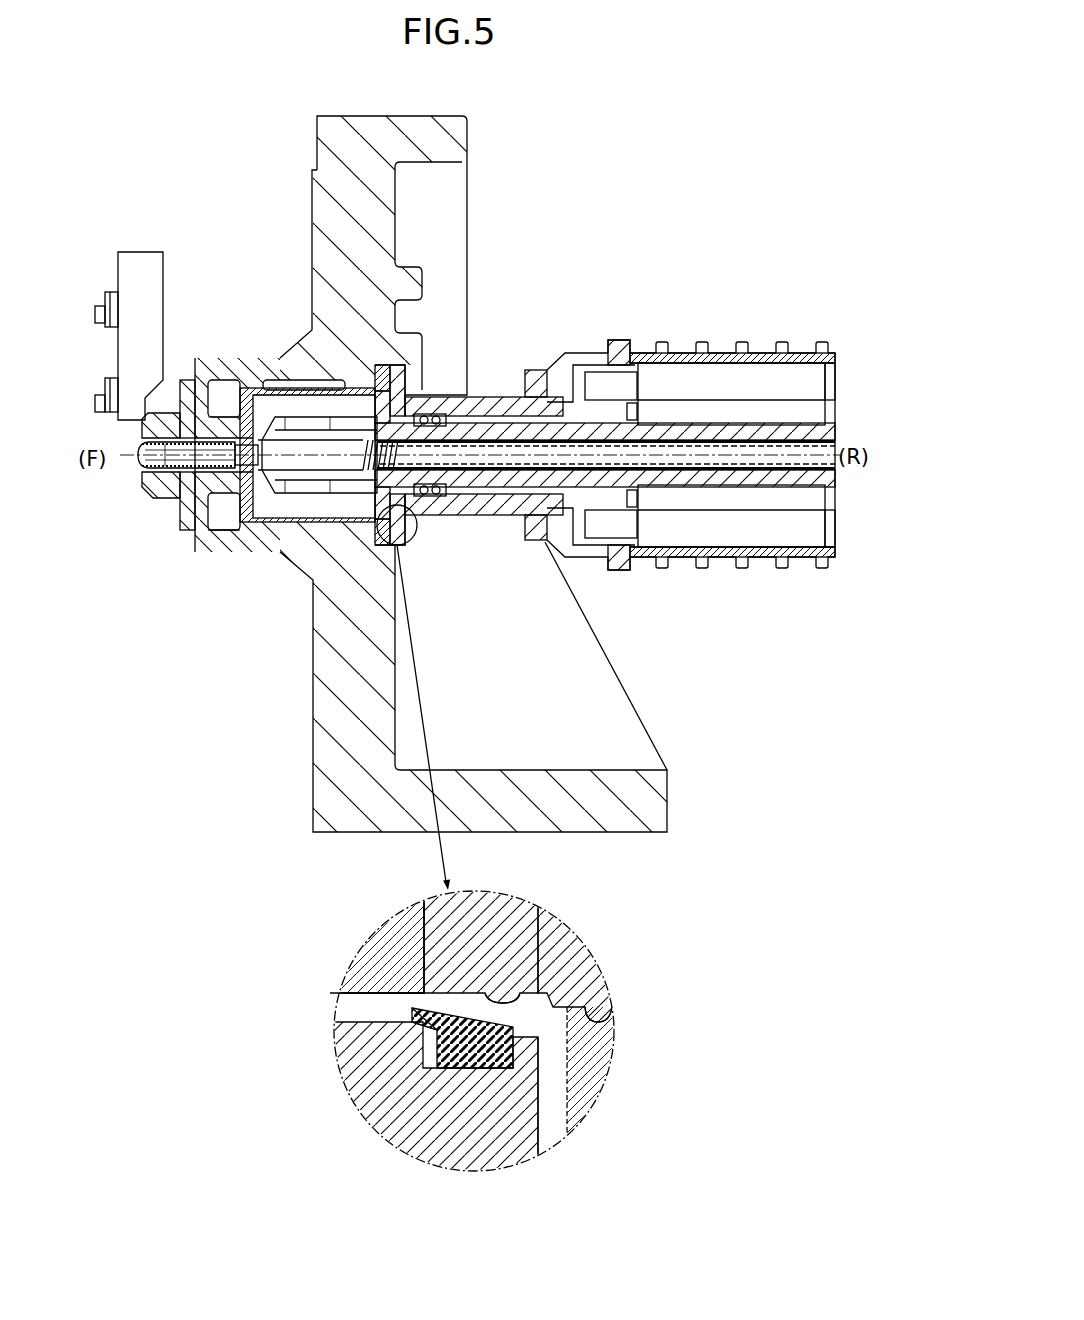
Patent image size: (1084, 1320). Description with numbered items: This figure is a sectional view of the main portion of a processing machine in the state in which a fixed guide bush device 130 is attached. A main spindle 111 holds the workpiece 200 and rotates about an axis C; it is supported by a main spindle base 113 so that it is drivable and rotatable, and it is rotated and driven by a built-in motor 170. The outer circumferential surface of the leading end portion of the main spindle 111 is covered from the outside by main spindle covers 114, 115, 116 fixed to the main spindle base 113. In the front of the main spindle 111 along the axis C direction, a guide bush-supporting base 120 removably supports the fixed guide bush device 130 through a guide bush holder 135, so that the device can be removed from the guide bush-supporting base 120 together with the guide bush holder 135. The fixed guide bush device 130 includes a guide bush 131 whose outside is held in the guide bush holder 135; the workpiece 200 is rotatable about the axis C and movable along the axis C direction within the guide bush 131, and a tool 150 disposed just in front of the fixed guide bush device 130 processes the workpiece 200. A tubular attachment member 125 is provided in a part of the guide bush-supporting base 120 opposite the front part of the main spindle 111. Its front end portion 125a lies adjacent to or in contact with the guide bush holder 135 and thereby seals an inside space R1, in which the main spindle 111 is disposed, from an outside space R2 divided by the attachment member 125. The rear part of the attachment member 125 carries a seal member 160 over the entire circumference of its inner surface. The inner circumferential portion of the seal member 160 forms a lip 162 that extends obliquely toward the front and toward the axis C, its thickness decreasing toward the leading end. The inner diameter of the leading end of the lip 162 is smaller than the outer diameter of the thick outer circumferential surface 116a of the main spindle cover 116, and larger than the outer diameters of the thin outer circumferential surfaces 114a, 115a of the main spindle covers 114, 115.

The guide bush-supporting base 120 is at (347, 130).
The attachment member 125 is at (270, 375).
The end portion 125a is at (213, 531).
The fixed guide bush device 130 is at (132, 468).
The guide bush holder 135 is at (190, 532).
The tool 150 is at (145, 267).
The guide bush 131 is at (138, 450).
The workpiece 200 is at (168, 425).
The main spindle 111 is at (340, 488).
The outside space R2 is at (225, 400).
The inside space R1 is at (293, 405).
The main spindle cover 114 is at (383, 505).
The outer circumferential surface 114a is at (365, 997).
The main spindle cover 115 is at (420, 518).
The outer circumferential surface 115a is at (530, 990).
The main spindle cover 116 is at (490, 517).
The outer circumferential surface 116a is at (613, 1026).
The main spindle base 113 is at (617, 350).
The built-in motor 170 is at (703, 385).
The axis C is at (613, 460).
The seal member 160 is at (402, 377).
The lip 162 is at (410, 1020).